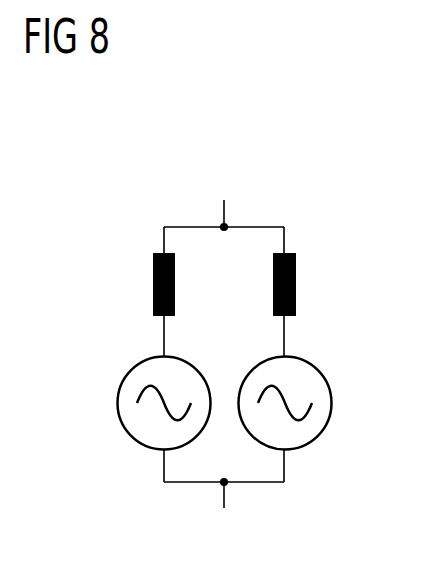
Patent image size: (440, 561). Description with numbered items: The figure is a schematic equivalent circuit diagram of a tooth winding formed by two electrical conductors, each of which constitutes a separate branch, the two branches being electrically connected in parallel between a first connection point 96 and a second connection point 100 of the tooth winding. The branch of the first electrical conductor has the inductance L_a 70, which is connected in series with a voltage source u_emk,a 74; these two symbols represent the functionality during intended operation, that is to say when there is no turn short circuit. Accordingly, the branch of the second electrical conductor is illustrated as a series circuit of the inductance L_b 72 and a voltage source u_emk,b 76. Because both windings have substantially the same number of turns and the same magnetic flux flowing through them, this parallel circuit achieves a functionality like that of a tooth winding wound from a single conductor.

The inductance L_a 70 is at (153, 283).
The inductance L_b 72 is at (296, 283).
The voltage source u_emk,a 74 is at (131, 371).
The voltage source u_emk,b 76 is at (317, 371).
The first connection point 96 is at (224, 200).
The connection point 100 is at (224, 505).